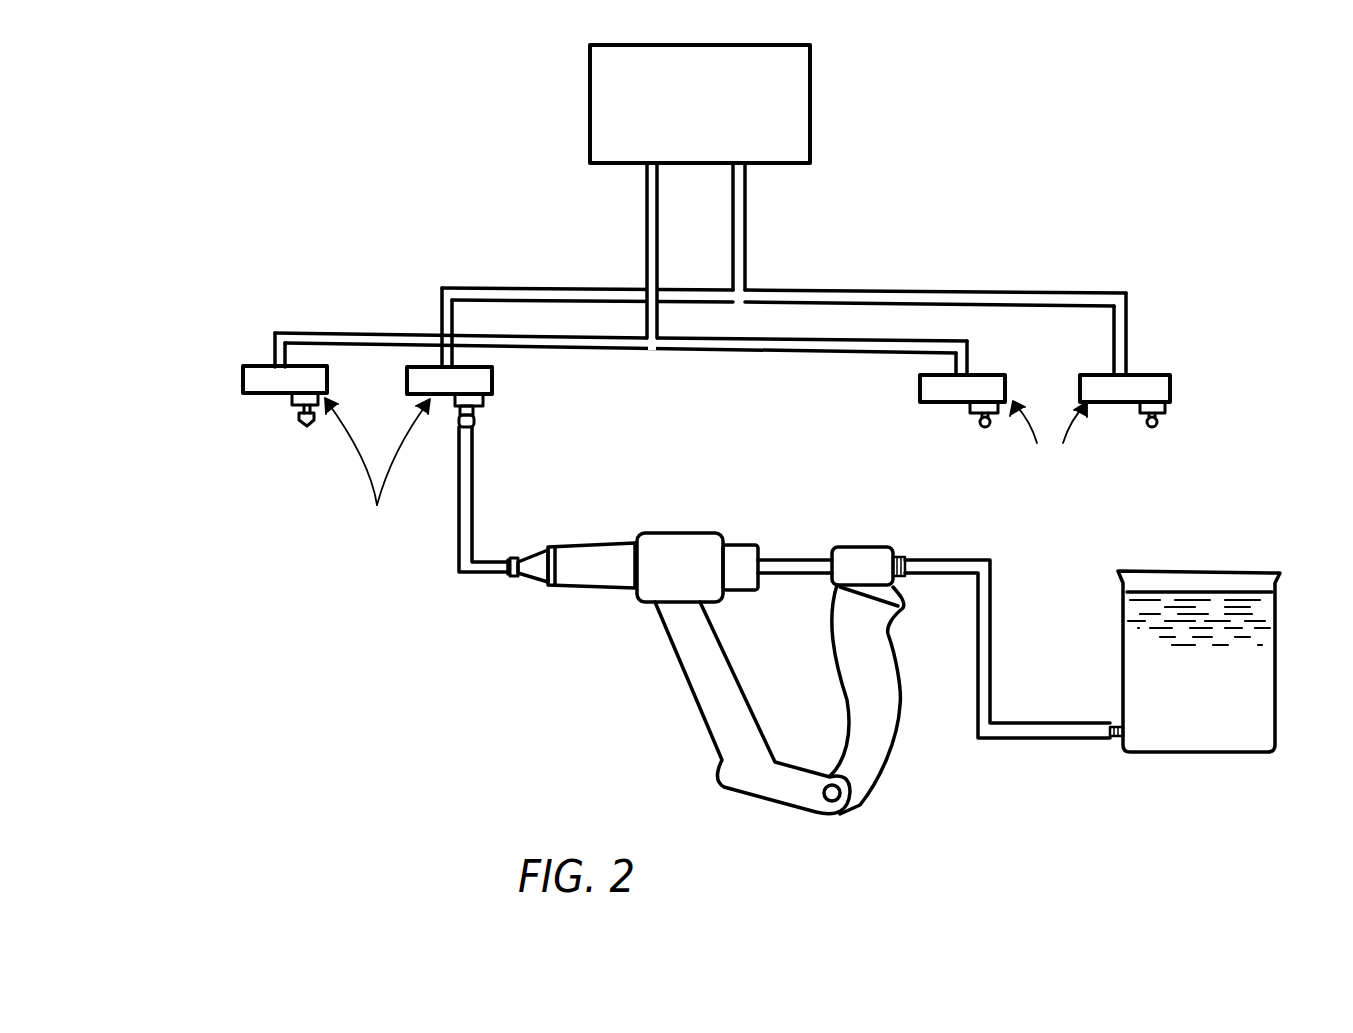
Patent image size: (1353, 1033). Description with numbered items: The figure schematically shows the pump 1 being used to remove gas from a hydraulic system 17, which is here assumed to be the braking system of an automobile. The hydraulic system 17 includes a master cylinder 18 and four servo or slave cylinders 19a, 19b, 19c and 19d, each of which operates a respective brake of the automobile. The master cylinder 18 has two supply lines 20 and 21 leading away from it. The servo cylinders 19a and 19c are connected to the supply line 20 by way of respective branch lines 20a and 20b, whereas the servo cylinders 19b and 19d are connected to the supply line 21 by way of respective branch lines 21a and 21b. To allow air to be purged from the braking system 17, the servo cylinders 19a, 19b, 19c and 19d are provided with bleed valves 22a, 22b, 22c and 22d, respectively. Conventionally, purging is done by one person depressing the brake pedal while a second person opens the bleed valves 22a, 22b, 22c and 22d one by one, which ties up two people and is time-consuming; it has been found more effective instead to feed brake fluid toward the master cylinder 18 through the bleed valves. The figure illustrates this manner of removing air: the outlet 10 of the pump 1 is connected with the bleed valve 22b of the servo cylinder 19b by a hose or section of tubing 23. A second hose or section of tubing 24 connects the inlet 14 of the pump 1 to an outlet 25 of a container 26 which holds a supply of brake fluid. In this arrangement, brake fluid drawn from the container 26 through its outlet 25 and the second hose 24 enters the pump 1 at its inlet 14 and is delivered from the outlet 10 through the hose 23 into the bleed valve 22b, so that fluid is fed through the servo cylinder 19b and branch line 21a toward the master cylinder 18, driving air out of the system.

The pump 1 is at (633, 664).
The outlet 10 is at (508, 578).
The inlet 14 is at (903, 560).
The hydraulic system 17 is at (452, 149).
The master cylinder 18 is at (810, 115).
The servo cylinder 19a is at (264, 365).
The servo cylinder 19b is at (494, 380).
The servo cylinder 19c is at (918, 384).
The servo cylinder 19d is at (1172, 390).
The supply line 20 is at (646, 220).
The branch line 20a is at (377, 332).
The branch line 20b is at (970, 355).
The supply line 21 is at (746, 225).
The branch line 21a is at (530, 288).
The branch line 21b is at (962, 292).
The bleed valve 22a is at (298, 424).
The bleed valve 22b is at (475, 421).
The bleed valve 22c is at (980, 422).
The bleed valve 22d is at (1160, 425).
The hose 23 is at (474, 497).
The second hose 24 is at (992, 638).
The outlet 25 is at (1113, 738).
The container 26 is at (1276, 676).